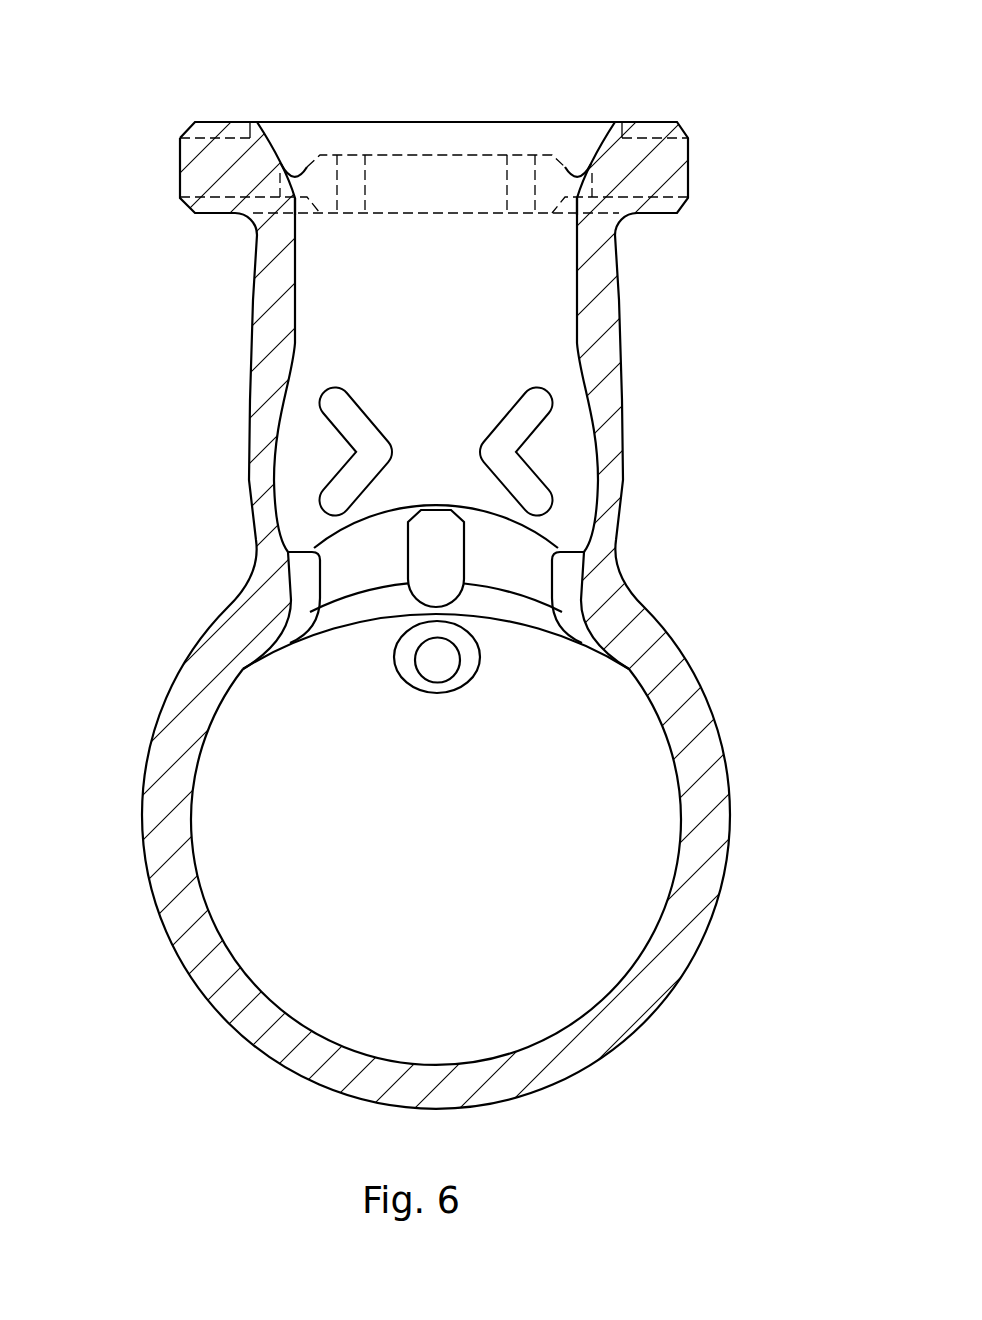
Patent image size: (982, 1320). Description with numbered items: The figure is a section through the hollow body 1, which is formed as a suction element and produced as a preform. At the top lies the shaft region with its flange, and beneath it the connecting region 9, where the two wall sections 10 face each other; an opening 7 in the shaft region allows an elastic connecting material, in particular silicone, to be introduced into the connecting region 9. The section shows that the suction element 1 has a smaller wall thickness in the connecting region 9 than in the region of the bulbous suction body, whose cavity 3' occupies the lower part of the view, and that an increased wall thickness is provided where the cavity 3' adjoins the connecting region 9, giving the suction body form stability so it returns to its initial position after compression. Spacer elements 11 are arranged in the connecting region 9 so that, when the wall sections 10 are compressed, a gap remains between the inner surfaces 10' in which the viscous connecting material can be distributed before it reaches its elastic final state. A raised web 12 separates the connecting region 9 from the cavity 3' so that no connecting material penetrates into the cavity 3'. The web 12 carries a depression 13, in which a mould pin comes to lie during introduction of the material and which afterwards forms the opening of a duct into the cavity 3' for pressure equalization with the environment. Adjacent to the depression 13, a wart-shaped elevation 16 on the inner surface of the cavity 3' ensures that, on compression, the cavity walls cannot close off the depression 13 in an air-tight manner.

The hollow body 1 is at (145, 602).
The cavity 3' is at (487, 839).
The opening 7 is at (552, 110).
The connecting region 9 is at (638, 460).
The wall sections 10 is at (480, 433).
The inner surfaces 10' is at (556, 433).
The spacer elements 11 is at (352, 478).
The raised web 12 is at (515, 558).
The depression 13 is at (430, 578).
The wart-shaped elevation 16 is at (433, 657).